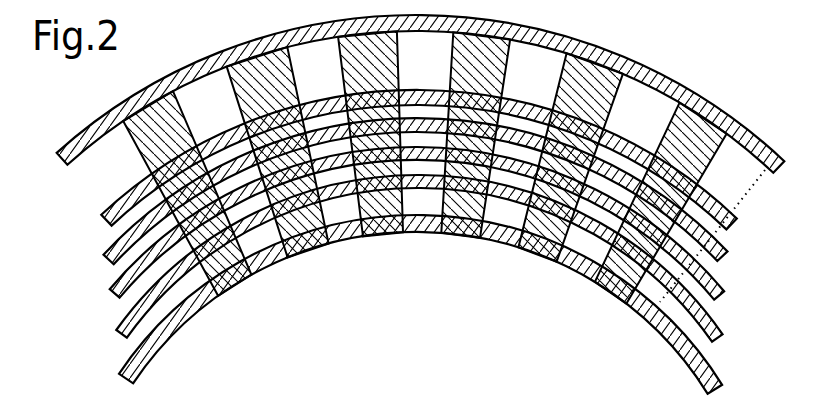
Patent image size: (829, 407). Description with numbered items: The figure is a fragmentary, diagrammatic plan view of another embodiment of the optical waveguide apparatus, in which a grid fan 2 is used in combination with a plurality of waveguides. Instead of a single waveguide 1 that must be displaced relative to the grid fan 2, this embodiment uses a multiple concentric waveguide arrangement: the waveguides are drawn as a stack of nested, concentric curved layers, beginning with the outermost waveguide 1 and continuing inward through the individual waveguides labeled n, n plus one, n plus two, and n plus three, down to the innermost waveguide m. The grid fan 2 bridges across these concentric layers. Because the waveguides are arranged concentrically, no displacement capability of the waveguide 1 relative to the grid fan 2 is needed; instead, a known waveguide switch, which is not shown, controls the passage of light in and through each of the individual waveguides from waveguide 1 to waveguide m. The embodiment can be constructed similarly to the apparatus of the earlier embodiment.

The waveguide 1 is at (185, 300).
The grid fan 2 is at (532, 70).
The waveguide n is at (411, 165).
The waveguide m is at (408, 307).